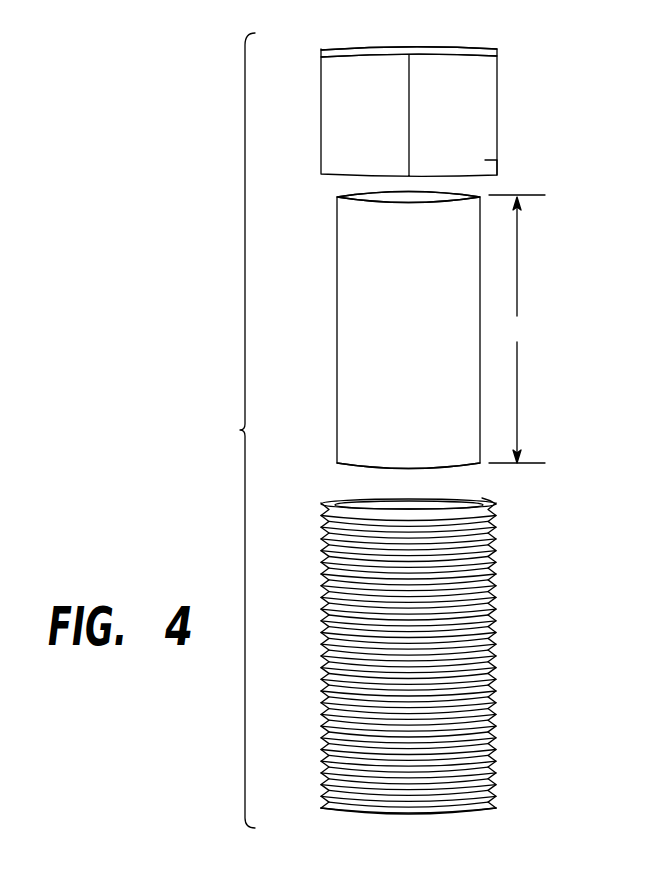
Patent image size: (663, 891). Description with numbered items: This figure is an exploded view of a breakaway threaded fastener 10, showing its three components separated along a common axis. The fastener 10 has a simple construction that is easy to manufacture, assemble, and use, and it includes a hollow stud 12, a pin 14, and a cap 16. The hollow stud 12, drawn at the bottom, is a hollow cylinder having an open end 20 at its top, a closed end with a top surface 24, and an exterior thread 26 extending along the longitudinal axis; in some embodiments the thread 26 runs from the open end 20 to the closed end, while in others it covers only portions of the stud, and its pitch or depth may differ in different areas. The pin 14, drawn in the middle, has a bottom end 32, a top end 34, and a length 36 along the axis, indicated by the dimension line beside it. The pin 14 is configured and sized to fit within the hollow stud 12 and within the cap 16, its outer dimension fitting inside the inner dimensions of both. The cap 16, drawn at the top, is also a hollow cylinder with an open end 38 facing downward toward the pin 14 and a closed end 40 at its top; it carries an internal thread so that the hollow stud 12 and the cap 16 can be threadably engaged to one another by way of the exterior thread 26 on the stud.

The breakaway threaded fastener 10 is at (240, 430).
The hollow stud 12 is at (429, 647).
The pin 14 is at (332, 298).
The cap 16 is at (505, 105).
The open end 20 is at (388, 507).
The top surface 24 is at (483, 503).
The exterior thread 26 is at (322, 672).
The bottom end 32 is at (350, 466).
The top end 34 is at (361, 196).
The length 36 is at (517, 329).
The open end 38 is at (488, 177).
The closed end 40 is at (473, 48).